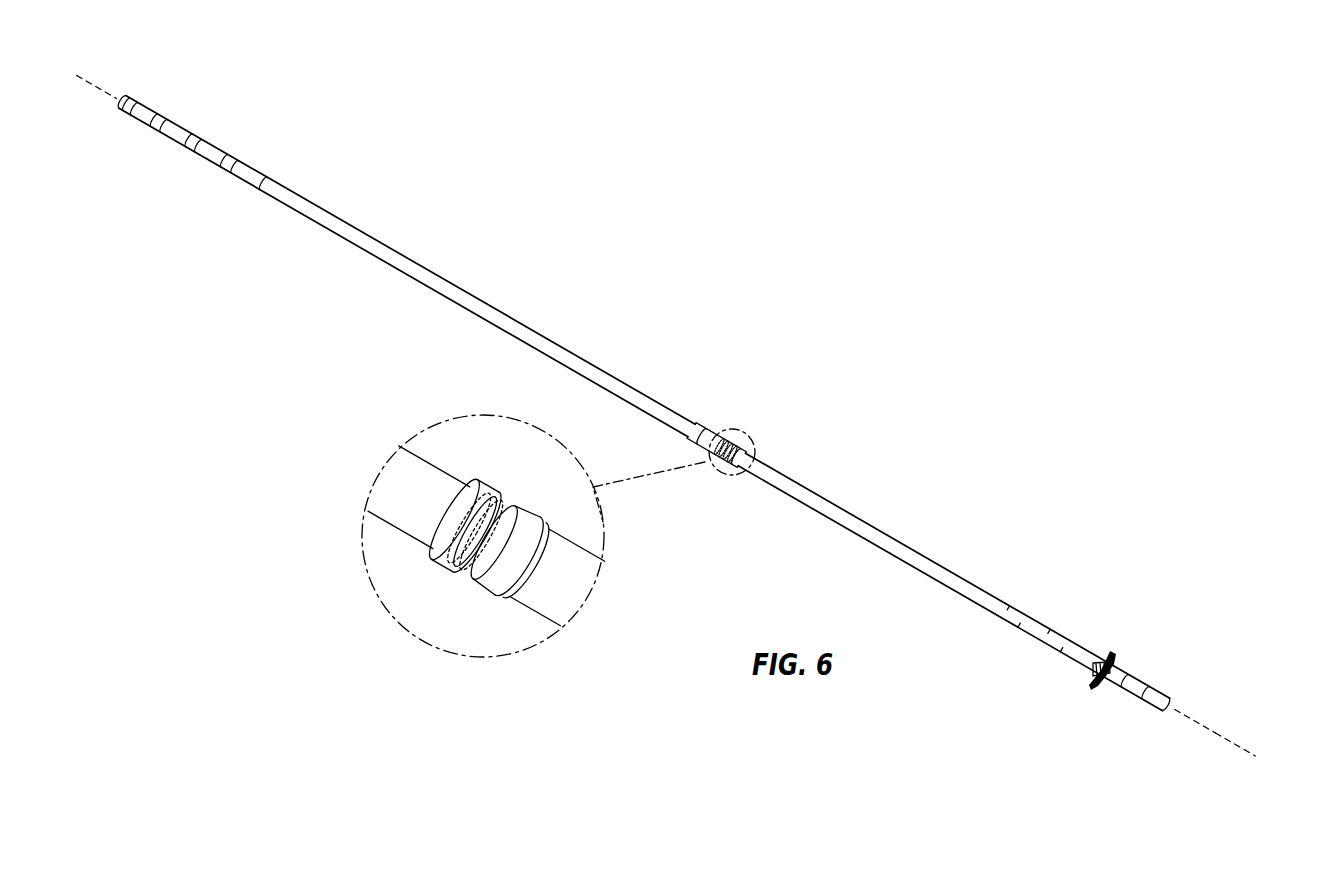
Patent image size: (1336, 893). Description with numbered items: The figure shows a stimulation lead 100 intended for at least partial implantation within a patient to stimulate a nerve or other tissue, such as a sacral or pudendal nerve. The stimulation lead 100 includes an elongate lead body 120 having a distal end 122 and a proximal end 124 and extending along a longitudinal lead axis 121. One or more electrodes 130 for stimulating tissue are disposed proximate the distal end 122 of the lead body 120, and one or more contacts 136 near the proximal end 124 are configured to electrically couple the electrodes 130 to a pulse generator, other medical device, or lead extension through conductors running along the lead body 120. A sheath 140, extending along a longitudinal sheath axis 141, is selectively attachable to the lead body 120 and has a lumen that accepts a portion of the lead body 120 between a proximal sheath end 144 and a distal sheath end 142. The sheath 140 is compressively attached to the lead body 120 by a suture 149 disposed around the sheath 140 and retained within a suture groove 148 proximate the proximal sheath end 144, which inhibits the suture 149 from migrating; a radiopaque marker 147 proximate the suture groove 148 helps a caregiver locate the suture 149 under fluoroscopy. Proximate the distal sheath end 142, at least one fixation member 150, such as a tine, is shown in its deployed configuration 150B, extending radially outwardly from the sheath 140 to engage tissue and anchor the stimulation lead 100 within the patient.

The stimulation lead 100 is at (687, 425).
The elongate lead body 120 is at (591, 364).
The longitudinal lead axis 121 is at (1255, 708).
The distal end 122 is at (1166, 711).
The proximal end 124 is at (122, 95).
The electrodes 130 is at (1131, 687).
The contacts 136 is at (200, 140).
The sheath 140 is at (848, 509).
The longitudinal sheath axis 141 is at (1209, 731).
The distal sheath end 142 is at (1120, 673).
The proximal sheath end 144 is at (689, 426).
The radiopaque marker 147 is at (488, 486).
The suture groove 148 is at (543, 500).
The suture 149 is at (450, 538).
The fixation member 150 is at (1112, 654).
The deployed configuration 150B is at (1129, 654).